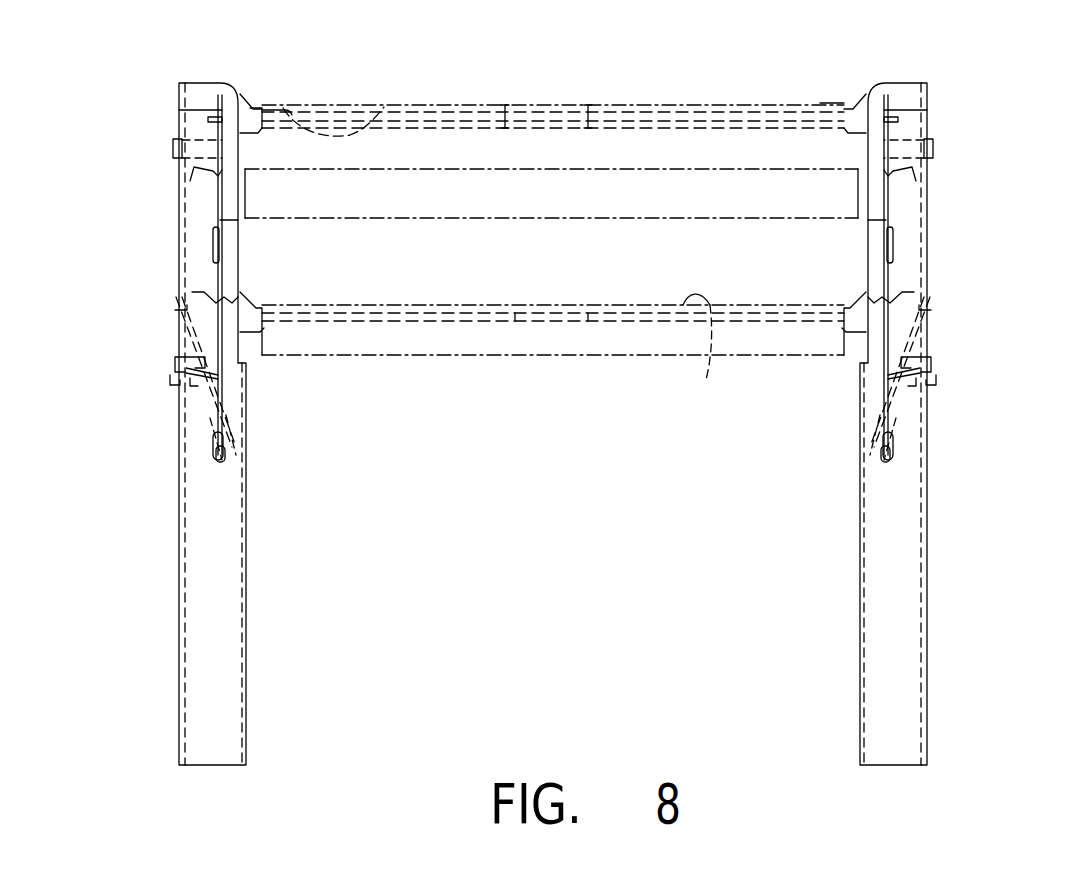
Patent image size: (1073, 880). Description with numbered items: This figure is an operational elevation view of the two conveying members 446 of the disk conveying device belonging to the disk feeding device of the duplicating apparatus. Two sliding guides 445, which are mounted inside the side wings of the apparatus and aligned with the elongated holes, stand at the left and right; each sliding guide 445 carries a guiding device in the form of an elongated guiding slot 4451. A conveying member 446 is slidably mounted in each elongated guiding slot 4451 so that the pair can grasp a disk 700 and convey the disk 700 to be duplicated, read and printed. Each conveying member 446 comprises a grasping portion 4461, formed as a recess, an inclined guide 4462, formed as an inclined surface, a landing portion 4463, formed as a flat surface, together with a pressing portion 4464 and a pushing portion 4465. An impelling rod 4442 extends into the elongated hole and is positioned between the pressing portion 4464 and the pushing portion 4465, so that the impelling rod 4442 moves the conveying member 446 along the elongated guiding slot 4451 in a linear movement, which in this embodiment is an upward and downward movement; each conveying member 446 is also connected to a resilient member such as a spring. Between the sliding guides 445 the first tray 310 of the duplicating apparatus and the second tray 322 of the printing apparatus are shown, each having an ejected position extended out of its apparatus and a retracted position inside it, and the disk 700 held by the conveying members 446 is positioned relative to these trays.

The disk 700 is at (508, 105).
The first tray 310 is at (706, 355).
The second tray 322 is at (765, 205).
The sliding guide 445 is at (907, 497).
The conveying member 446 is at (890, 292).
The grasping portion 4461 is at (383, 108).
The inclined guide 4462 is at (295, 101).
The landing portion 4463 is at (258, 103).
The elongated guiding slot 4451 is at (218, 273).
The pushing portion 4465 is at (178, 355).
The pressing portion 4464 is at (178, 363).
The impelling rod 4442 is at (175, 370).